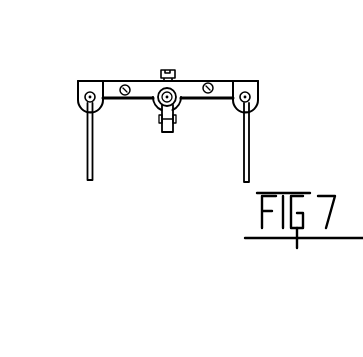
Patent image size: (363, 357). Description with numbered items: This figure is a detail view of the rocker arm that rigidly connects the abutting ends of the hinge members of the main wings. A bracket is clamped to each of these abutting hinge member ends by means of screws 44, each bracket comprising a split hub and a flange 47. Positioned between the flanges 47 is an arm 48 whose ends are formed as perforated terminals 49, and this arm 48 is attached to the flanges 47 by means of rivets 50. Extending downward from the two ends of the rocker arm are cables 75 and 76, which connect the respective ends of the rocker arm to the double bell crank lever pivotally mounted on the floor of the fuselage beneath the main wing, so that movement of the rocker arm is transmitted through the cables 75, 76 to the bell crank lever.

The screws 44 is at (170, 67).
The flange 47 is at (143, 88).
The arm 48 is at (98, 86).
The perforated terminals 49 is at (88, 100).
The rivets 50 is at (126, 84).
The cable 75 is at (86, 167).
The cable 76 is at (249, 147).